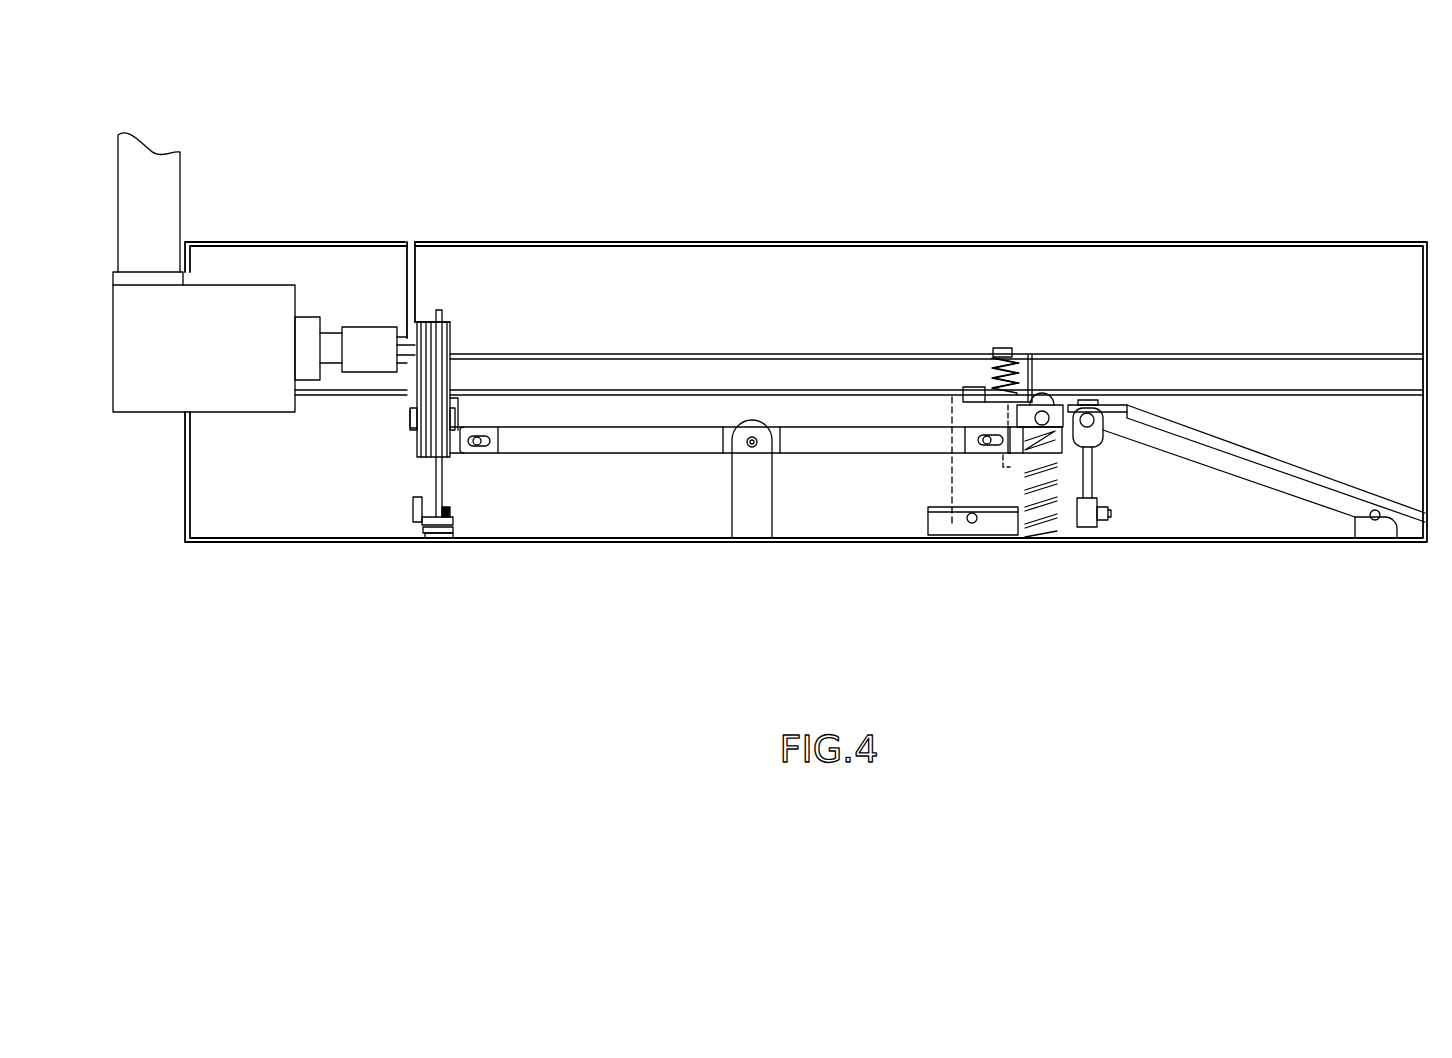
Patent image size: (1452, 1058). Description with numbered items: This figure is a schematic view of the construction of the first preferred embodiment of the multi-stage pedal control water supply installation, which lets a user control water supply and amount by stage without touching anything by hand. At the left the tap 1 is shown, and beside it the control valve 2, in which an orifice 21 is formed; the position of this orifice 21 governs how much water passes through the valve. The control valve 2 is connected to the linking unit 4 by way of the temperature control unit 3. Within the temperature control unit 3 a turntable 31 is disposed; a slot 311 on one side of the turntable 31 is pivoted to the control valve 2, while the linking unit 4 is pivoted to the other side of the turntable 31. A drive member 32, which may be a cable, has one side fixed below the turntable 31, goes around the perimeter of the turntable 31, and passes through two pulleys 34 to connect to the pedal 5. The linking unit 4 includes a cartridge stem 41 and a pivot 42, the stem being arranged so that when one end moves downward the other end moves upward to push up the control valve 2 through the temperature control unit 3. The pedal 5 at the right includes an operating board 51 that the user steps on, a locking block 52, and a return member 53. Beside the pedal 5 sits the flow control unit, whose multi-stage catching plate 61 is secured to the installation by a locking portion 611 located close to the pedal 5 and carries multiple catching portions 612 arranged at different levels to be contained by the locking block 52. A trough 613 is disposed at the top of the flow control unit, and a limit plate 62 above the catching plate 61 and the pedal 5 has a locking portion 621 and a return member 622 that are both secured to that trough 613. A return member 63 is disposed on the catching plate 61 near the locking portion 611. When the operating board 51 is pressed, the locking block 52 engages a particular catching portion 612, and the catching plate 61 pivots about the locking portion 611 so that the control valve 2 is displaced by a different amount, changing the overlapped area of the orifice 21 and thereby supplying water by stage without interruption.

The tap 1 is at (222, 300).
The control valve 2 is at (358, 343).
The orifice 21 is at (410, 363).
The temperature control unit 3 is at (455, 322).
The turntable 31 is at (430, 320).
The slot 311 is at (427, 350).
The drive member 32 is at (444, 486).
The pulleys 34 is at (437, 538).
The linking unit 4 is at (688, 424).
The cartridge stem 41 is at (663, 447).
The pivot 42 is at (758, 452).
The pedal 5 is at (1262, 477).
The operating board 51 is at (1247, 453).
The locking block 52 is at (1042, 400).
The return member 53 is at (1056, 537).
The multi-stage catching plate 61 is at (965, 473).
The locking portion 611 is at (978, 530).
The catching portions 612 is at (1003, 470).
The trough 613 is at (980, 388).
The limit plate 62 is at (1033, 355).
The locking portion 621 is at (964, 388).
The return member 622 is at (1012, 348).
The return member 63 is at (950, 526).